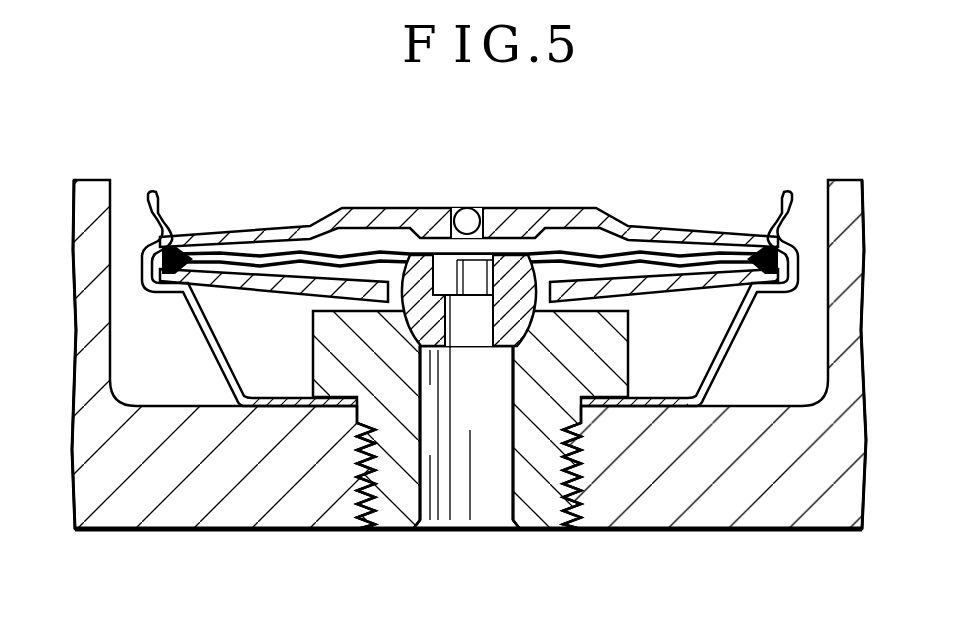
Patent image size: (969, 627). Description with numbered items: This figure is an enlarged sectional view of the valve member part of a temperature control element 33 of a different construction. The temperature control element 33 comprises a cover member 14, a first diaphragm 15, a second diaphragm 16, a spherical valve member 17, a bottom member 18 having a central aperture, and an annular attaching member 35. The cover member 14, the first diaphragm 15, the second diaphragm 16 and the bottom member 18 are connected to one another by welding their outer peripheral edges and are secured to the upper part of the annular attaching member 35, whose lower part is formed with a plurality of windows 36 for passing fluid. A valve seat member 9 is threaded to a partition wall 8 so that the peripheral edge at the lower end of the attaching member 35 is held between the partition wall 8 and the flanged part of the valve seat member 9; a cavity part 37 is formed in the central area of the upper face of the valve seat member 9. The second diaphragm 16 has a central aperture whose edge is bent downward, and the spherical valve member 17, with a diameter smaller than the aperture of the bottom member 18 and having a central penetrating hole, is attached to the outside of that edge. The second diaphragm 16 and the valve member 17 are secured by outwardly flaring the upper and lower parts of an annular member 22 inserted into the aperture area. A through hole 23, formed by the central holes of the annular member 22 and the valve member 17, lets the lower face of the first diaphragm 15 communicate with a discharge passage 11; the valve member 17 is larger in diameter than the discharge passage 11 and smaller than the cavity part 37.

The partition wall 8 is at (678, 506).
The valve seat member 9 is at (548, 513).
The discharge passage 11 is at (455, 519).
The cover member 14 is at (569, 212).
The first diaphragm 15 is at (606, 232).
The second diaphragm 16 is at (630, 288).
The spherical valve member 17 is at (437, 356).
The bottom member 18 is at (281, 282).
The annular member 22 is at (451, 265).
The through hole 23 is at (474, 350).
The temperature control element 33 is at (484, 166).
The annular attaching member 35 is at (734, 356).
The windows 36 is at (207, 338).
The cavity part 37 is at (568, 332).